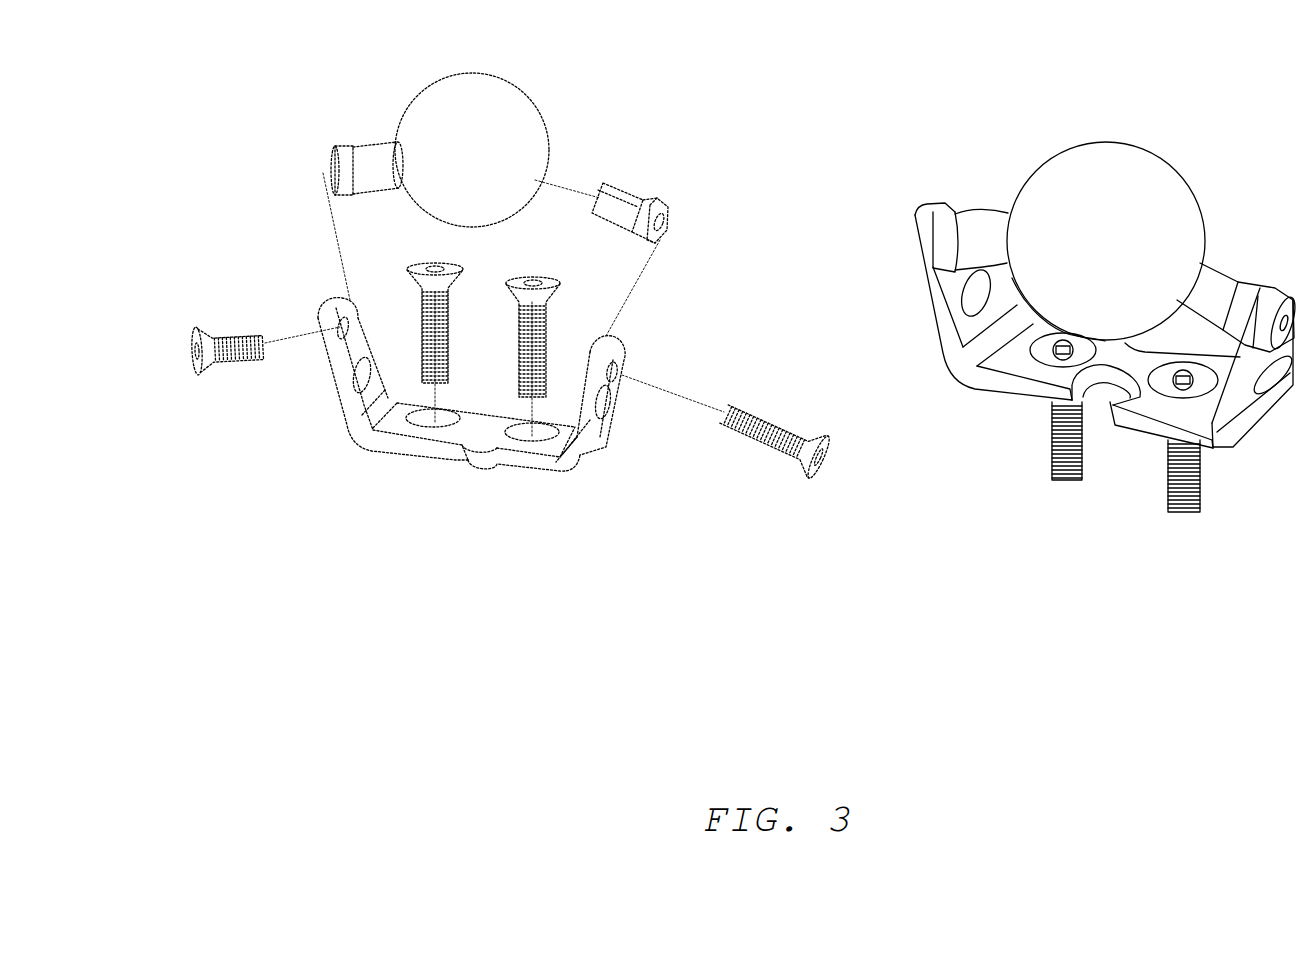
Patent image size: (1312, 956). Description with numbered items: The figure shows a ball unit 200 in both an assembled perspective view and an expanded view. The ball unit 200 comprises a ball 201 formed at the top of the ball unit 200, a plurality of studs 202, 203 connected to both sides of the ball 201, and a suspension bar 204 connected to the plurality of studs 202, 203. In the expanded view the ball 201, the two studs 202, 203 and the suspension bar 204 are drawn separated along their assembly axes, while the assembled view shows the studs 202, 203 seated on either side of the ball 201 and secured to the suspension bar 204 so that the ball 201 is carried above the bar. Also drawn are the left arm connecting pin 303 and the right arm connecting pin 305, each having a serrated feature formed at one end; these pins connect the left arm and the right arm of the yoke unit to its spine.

The ball unit 200 is at (1032, 157).
The ball 201 is at (540, 130).
The stud 202 is at (370, 145).
The stud 203 is at (665, 214).
The suspension bar 204 is at (538, 467).
The left arm connecting pin 303 is at (420, 334).
The right arm connecting pin 305 is at (546, 345).